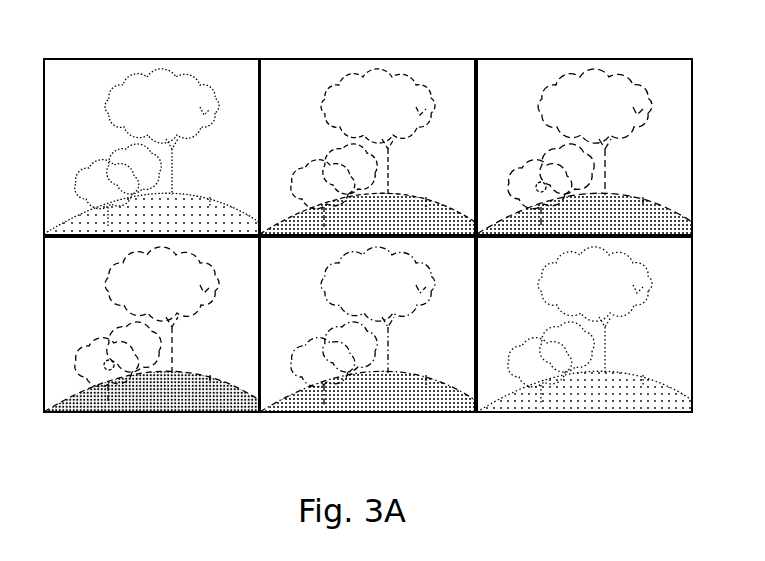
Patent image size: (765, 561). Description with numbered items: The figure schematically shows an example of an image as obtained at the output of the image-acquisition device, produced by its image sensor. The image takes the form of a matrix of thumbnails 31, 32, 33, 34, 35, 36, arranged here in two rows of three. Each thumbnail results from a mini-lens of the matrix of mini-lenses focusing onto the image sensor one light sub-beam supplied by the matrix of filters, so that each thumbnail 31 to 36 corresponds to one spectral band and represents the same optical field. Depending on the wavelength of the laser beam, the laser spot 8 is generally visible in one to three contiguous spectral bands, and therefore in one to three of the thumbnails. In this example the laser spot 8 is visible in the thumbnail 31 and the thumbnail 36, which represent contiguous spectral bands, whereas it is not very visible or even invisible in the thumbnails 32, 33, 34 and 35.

The thumbnail 31 is at (134, 413).
The thumbnail 32 is at (376, 413).
The thumbnail 33 is at (585, 413).
The thumbnail 34 is at (161, 58).
The thumbnail 35 is at (362, 58).
The thumbnail 36 is at (579, 58).
The laser spot 8 is at (537, 184).